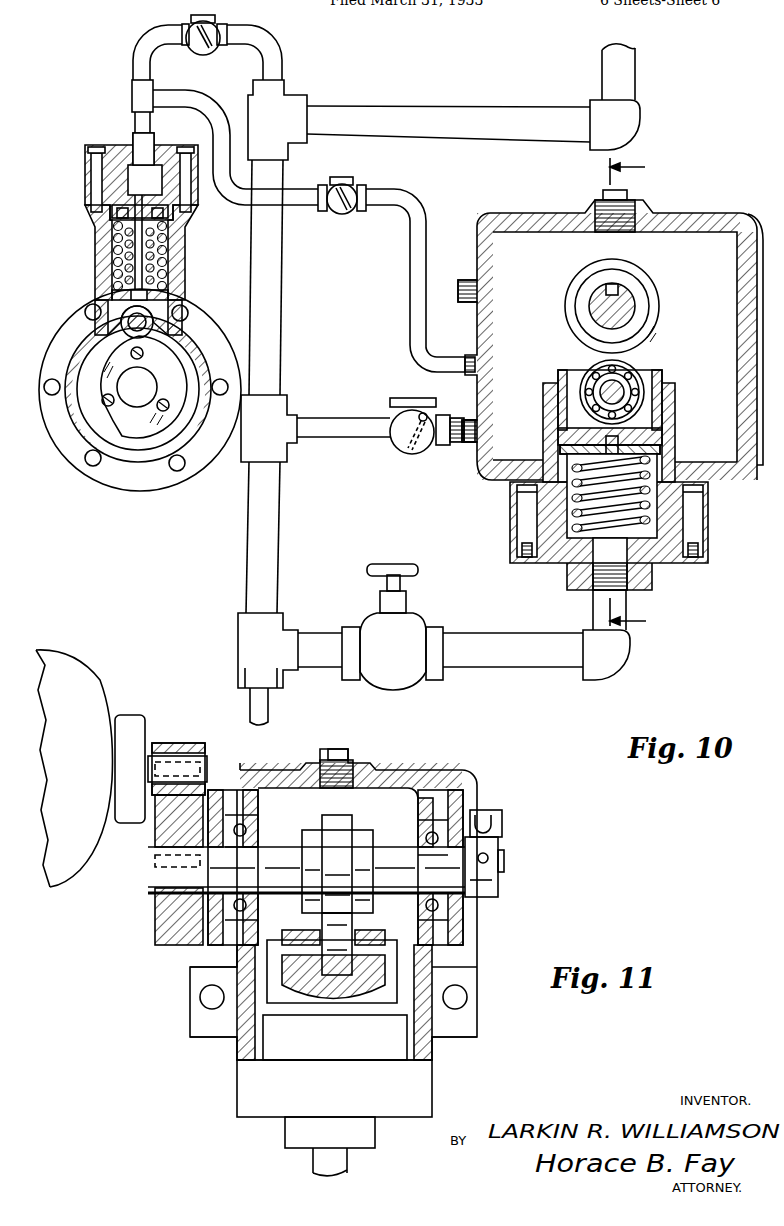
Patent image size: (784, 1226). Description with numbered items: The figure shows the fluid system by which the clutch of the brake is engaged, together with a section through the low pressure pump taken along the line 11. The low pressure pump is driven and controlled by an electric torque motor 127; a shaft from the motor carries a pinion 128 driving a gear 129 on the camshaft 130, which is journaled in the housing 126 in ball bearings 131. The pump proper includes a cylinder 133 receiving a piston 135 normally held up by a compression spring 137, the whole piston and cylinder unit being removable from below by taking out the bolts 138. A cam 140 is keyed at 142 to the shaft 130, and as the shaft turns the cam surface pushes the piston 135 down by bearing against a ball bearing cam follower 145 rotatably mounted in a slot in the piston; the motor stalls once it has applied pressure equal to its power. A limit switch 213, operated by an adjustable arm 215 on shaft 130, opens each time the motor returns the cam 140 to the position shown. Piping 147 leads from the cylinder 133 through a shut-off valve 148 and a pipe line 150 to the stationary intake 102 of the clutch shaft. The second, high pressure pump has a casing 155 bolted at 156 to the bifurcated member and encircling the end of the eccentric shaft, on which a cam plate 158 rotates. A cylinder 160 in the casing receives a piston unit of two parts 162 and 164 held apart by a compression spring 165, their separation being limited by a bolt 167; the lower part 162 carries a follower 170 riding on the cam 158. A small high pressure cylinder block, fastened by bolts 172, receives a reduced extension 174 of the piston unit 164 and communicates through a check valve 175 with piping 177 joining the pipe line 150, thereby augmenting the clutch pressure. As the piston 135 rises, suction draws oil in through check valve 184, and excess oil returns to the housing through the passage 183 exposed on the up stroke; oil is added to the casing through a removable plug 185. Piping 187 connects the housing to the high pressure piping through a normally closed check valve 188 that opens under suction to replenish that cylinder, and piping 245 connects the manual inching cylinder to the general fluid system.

In FIG. 10, the section line 11— 11 is at (640, 396).
In FIG. 10, the stationary intake 102 is at (630, 66).
In FIG. 10, the pump housing 126 is at (725, 213).
In FIG. 11, the electric torque motor 127 is at (93, 685).
In FIG. 11, the pinion 128 is at (180, 742).
In FIG. 11, the gear 129 is at (158, 920).
In FIG. 10, the camshaft 130 is at (592, 312).
In FIG. 11, the camshaft 130 is at (498, 875).
In FIG. 11, the ball bearings 131 is at (252, 832).
In FIG. 10, the cylinder 133 is at (565, 498).
In FIG. 10, the piston 135 is at (655, 378).
In FIG. 11, the piston 135 is at (295, 983).
In FIG. 10, the compression spring 137 is at (597, 550).
In FIG. 10, the bolts 138 is at (705, 523).
In FIG. 10, the cam 140 is at (665, 318).
In FIG. 11, the cam 140 is at (340, 832).
In FIG. 10, the key 142 is at (614, 286).
In FIG. 10, the ball bearing cam follower 145 is at (592, 363).
In FIG. 11, the ball bearing cam follower 145 is at (345, 930).
In FIG. 10, the piping 147 is at (534, 668).
In FIG. 11, the piping 147 is at (312, 1160).
In FIG. 10, the shut-off valve 148 is at (400, 684).
In FIG. 10, the pipe line 150 is at (462, 118).
In FIG. 10, the casing 155 is at (78, 440).
In FIG. 10, the bolts 156 is at (178, 471).
In FIG. 10, the cam plate 158 is at (130, 425).
In FIG. 10, the cylinder 160 is at (95, 238).
In FIG. 10, the lower piston part 162 is at (170, 292).
In FIG. 10, the piston unit 164 is at (180, 222).
In FIG. 10, the compression spring 165 is at (113, 272).
In FIG. 10, the bolt 167 is at (168, 262).
In FIG. 10, the follower 170 is at (128, 333).
In FIG. 10, the bolts 172 is at (85, 163).
In FIG. 10, the extension 174 is at (131, 170).
In FIG. 10, the check valve 175 is at (182, 30).
In FIG. 10, the piping 177 is at (271, 38).
In FIG. 10, the passage 183 is at (545, 455).
In FIG. 10, the check valve 184 is at (420, 456).
In FIG. 10, the removable plug 185 is at (612, 206).
In FIG. 10, the piping 187 is at (425, 216).
In FIG. 10, the check valve 188 is at (352, 186).
In FIG. 11, the limit switch 213 is at (497, 822).
In FIG. 11, the adjustable arm 215 is at (484, 832).
In FIG. 10, the piping 245 is at (268, 708).